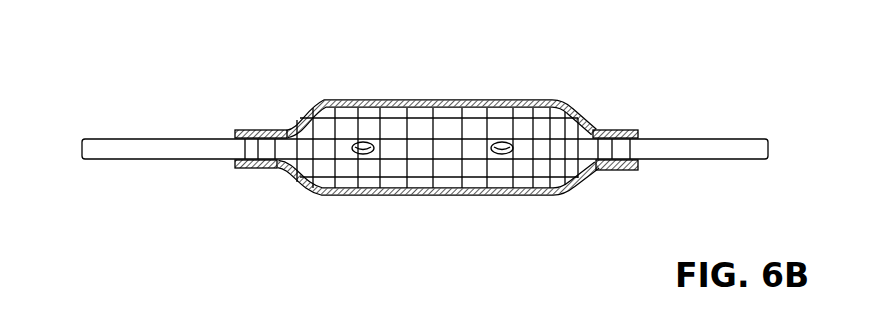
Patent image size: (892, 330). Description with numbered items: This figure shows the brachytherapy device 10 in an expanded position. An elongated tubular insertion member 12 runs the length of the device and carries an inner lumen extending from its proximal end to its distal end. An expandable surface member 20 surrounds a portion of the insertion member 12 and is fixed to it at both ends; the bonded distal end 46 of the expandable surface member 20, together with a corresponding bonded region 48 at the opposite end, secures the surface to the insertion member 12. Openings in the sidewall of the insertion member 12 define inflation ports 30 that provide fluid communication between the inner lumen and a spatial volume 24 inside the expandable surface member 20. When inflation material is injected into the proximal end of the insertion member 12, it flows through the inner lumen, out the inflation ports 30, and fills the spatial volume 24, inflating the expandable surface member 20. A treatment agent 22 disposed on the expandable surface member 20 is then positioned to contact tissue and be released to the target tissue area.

The catheter assembly 10 is at (442, 58).
The insertion member 12 is at (100, 138).
The expandable surface member 20 is at (376, 100).
The treatment agent 22 is at (467, 118).
The spatial volume 24 is at (450, 172).
The inflation ports 30 is at (365, 145).
The distal end of the expandable surface member 46 is at (277, 118).
The distal collar 48 is at (598, 125).